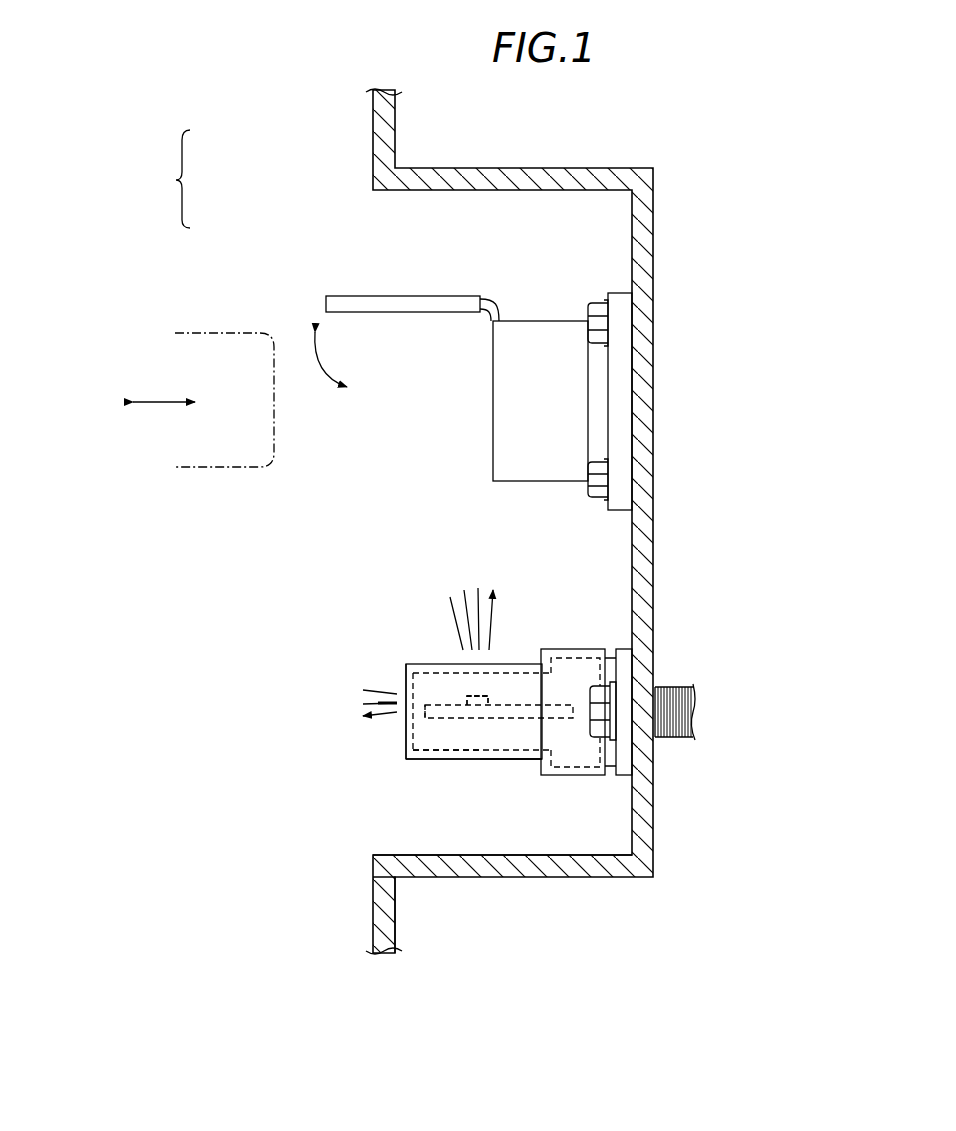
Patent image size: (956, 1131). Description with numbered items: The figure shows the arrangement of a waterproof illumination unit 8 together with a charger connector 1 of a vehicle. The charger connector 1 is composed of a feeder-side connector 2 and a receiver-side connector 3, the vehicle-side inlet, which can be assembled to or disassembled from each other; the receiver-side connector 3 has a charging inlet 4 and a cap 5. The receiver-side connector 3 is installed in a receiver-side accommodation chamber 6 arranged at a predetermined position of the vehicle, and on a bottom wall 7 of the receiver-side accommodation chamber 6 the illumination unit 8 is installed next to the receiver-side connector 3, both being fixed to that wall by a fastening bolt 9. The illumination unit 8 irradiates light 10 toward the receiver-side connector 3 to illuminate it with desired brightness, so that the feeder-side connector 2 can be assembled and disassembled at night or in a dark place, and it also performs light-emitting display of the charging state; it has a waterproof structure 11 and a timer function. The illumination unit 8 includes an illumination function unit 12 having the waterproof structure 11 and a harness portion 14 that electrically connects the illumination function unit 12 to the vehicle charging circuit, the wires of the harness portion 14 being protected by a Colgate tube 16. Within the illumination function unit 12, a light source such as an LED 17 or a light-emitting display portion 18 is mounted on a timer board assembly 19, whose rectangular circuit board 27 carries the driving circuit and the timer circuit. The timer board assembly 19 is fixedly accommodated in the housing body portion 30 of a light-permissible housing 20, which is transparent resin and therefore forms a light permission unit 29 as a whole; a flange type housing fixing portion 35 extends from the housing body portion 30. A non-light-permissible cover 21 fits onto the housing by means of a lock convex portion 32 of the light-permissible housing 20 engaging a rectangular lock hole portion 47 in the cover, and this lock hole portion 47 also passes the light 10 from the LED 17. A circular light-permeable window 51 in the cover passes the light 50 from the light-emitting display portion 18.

The charger connector 1 is at (173, 179).
The feeder-side connector 2 is at (237, 333).
The receiver-side connector 3 is at (377, 293).
The charging inlet 4 is at (502, 413).
The cap 5 is at (448, 302).
The receiver-side accommodation chamber 6 is at (406, 853).
The bottom wall 7 is at (643, 233).
The illumination unit 8 is at (573, 783).
The fastening bolt 9 is at (588, 306).
The light 10 is at (456, 622).
The waterproof structure 11 is at (586, 752).
The illumination function unit 12 is at (407, 749).
The harness portion 14 is at (675, 740).
The Colgate tube 16 is at (683, 712).
The LED 17 is at (467, 700).
The light-emitting display portion 18 is at (433, 700).
The timer board assembly 19 is at (497, 718).
The light-permissible housing 20 is at (433, 758).
The non-light-permissible cover 21 is at (418, 758).
The circuit board 27 is at (523, 710).
The light permission unit 29 is at (498, 762).
The housing body portion 30 is at (518, 762).
The lock convex portion 32 is at (465, 672).
The lock hole portion 47 is at (465, 672).
The housing fixing portion 35 is at (623, 670).
The light 50 is at (385, 712).
The light-permeable window 51 is at (400, 707).